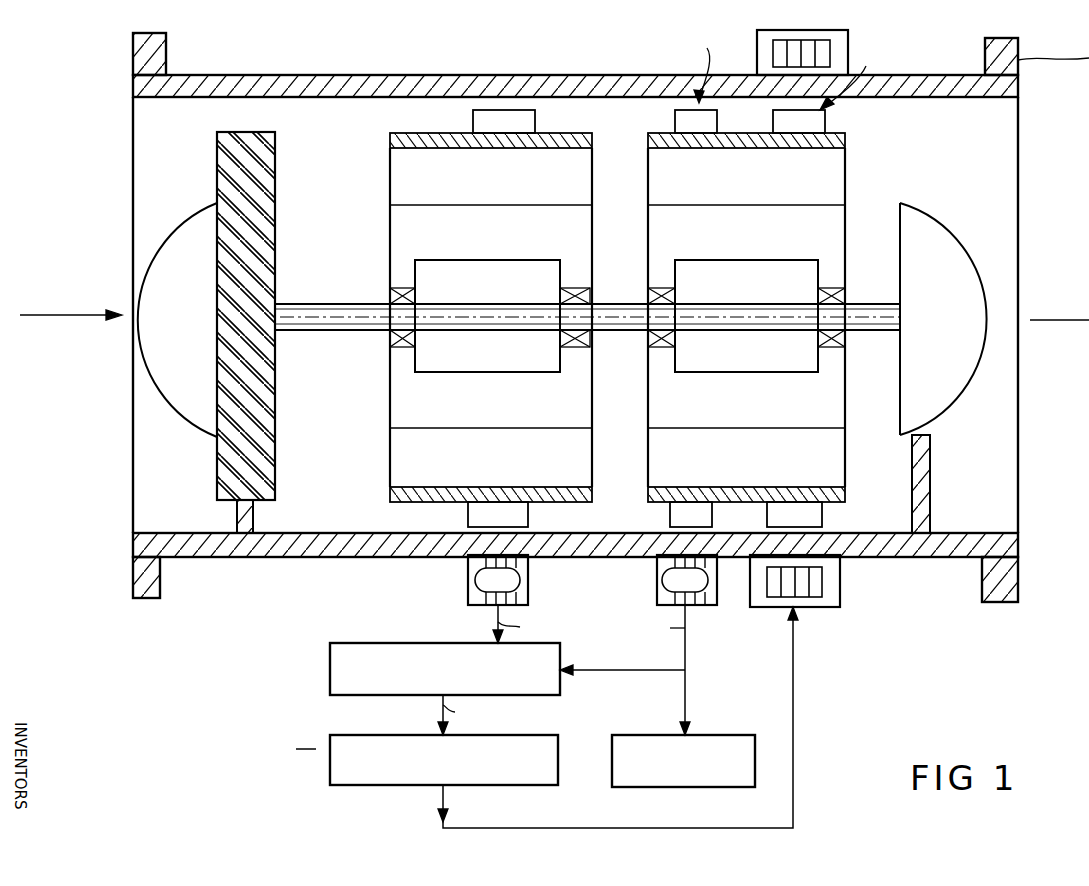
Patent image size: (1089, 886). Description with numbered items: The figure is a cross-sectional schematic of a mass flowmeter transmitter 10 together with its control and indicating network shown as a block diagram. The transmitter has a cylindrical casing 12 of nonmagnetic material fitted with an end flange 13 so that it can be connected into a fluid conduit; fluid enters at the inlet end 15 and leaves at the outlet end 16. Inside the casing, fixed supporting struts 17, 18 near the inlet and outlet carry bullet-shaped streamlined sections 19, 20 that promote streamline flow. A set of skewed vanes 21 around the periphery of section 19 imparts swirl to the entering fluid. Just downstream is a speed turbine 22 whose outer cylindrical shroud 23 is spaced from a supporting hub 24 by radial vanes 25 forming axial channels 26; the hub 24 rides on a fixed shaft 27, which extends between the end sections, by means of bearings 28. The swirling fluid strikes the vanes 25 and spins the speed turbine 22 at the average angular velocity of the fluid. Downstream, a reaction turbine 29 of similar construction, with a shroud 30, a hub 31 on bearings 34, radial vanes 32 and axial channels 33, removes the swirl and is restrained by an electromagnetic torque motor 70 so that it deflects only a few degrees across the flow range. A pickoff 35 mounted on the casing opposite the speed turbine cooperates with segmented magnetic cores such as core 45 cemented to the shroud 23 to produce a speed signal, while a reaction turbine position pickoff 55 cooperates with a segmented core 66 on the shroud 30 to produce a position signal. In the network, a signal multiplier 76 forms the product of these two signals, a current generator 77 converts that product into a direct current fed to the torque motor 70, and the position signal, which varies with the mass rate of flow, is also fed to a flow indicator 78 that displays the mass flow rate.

The transmitter unit 10 is at (241, 60).
The cylindrical casing 12 is at (288, 78).
The end flange 13 is at (138, 58).
The inlet end 15 is at (133, 128).
The outlet end 16 is at (1022, 130).
The supporting strut 17 is at (253, 514).
The supporting strut 18 is at (930, 490).
The streamlined section 19 is at (195, 415).
The streamlined section 20 is at (960, 400).
The skewed vanes 21 is at (275, 408).
The speed turbine 22 is at (390, 206).
The outer cylindrical shroud 23 is at (392, 134).
The supporting hub 24 is at (390, 238).
The radial vanes 25 is at (390, 172).
The axial channels 26 is at (432, 202).
The fixed shaft 27 is at (318, 330).
The bearings 28 is at (415, 298).
The reaction turbine 29 is at (845, 208).
The outer cylindrical shroud 30 is at (845, 134).
The hub 31 is at (845, 252).
The radial vanes 32 is at (648, 180).
The axial channels 33 is at (700, 202).
The bearings 34 is at (675, 298).
The pickoff 35 is at (468, 573).
The core 45 is at (535, 115).
The reaction turbine position pickoff 55 is at (657, 582).
The segmented core 66 is at (717, 110).
The torque motor 70 is at (840, 584).
The signal multiplier 76 is at (388, 653).
The current generator 77 is at (333, 772).
The flow indicator 78 is at (730, 742).